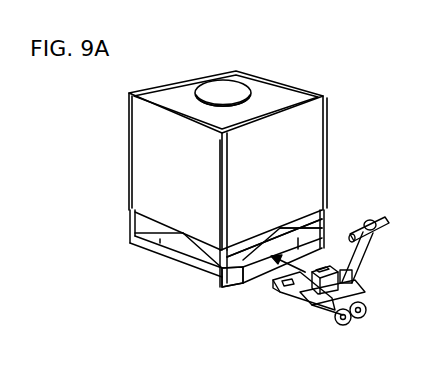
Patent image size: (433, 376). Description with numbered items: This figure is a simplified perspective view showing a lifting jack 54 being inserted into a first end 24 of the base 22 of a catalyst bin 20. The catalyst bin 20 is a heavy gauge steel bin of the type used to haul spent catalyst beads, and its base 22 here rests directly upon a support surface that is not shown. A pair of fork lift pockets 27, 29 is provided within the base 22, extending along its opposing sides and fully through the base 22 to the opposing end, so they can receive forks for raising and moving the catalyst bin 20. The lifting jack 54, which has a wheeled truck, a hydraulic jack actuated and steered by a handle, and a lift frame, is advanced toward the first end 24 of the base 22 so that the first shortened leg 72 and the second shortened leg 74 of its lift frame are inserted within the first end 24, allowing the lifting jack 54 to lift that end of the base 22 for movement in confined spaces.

The catalyst bin 20 is at (303, 160).
The base 22 is at (186, 265).
The first end 24 is at (258, 265).
The fork lift pocket 27 is at (237, 280).
The fork lift pocket 29 is at (329, 248).
The lifting jack 54 is at (363, 278).
The first shortened leg 72 is at (317, 267).
The second shortened leg 74 is at (287, 290).